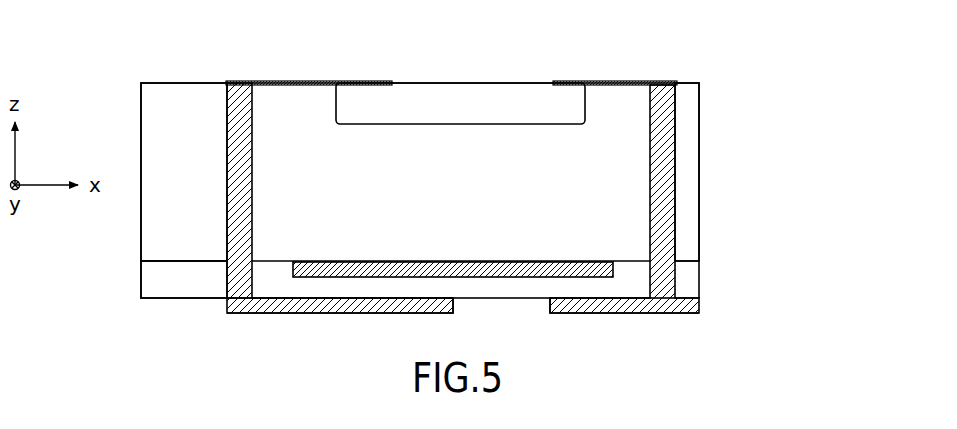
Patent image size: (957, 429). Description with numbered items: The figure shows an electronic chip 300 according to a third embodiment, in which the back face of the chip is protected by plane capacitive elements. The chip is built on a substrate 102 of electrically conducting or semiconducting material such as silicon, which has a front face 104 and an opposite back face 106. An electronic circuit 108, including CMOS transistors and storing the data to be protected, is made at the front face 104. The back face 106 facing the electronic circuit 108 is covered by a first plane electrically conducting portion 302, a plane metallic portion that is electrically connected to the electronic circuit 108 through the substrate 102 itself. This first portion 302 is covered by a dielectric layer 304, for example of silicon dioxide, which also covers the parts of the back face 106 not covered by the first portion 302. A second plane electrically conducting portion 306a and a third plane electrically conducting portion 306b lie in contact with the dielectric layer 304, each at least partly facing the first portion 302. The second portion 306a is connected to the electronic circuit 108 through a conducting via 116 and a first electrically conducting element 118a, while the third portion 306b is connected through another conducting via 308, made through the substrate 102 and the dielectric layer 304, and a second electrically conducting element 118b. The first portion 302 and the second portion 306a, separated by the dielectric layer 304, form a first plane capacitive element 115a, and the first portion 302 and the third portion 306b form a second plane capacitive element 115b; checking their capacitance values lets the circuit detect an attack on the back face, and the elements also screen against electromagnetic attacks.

The electronic chip 300 is at (703, 54).
The substrate 102 is at (686, 237).
The front face 104 is at (172, 80).
The back face 106 is at (203, 266).
The electronic circuit 108 is at (492, 94).
The first plane capacitive element 115a is at (371, 284).
The second plane capacitive element 115b is at (605, 284).
The conducting via 116 is at (237, 96).
The first electrically conducting element 118a is at (323, 81).
The second electrically conducting element 118b is at (606, 81).
The first plane electrically conducting portion 302 is at (497, 262).
The dielectric layer 304 is at (152, 281).
The second plane electrically conducting portion 306a is at (310, 315).
The third plane electrically conducting portion 306b is at (558, 314).
The conducting via 308 is at (672, 144).